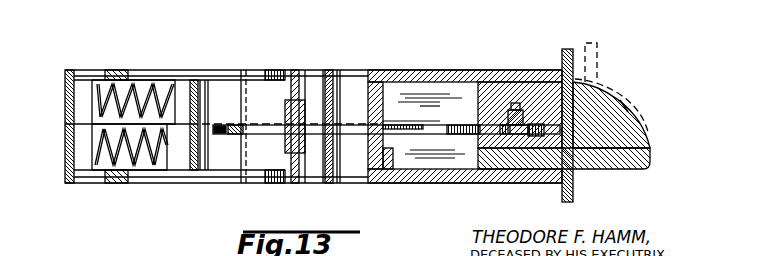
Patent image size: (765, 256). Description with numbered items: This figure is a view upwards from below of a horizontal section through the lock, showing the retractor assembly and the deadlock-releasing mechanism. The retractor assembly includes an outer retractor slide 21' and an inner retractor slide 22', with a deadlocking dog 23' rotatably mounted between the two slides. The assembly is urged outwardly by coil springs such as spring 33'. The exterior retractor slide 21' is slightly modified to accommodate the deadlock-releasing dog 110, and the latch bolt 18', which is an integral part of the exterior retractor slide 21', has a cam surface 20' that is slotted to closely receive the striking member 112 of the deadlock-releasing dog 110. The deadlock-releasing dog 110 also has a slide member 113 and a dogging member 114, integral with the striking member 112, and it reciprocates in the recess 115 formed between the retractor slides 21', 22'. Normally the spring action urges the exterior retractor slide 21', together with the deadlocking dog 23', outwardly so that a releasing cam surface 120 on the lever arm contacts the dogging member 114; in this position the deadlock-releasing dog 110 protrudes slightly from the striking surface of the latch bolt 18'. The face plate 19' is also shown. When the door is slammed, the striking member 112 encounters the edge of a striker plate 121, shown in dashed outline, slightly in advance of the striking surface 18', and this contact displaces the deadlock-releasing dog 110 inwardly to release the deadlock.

The coil spring 33' is at (134, 105).
The inner retractor slide 22' is at (215, 107).
The outer retractor slide 21' is at (246, 141).
The deadlocking dog 23' is at (298, 142).
The releasing cam surface 120 is at (531, 85).
The recess 115 is at (507, 140).
The slide member 113 is at (525, 140).
The dogging member 114 is at (550, 132).
The face plate 19' is at (591, 128).
The striker plate 121 is at (598, 63).
The cam surface 20' is at (625, 89).
The latch bolt 18' is at (644, 91).
The striking member 112 is at (632, 118).
The deadlock-releasing dog 110 is at (635, 135).